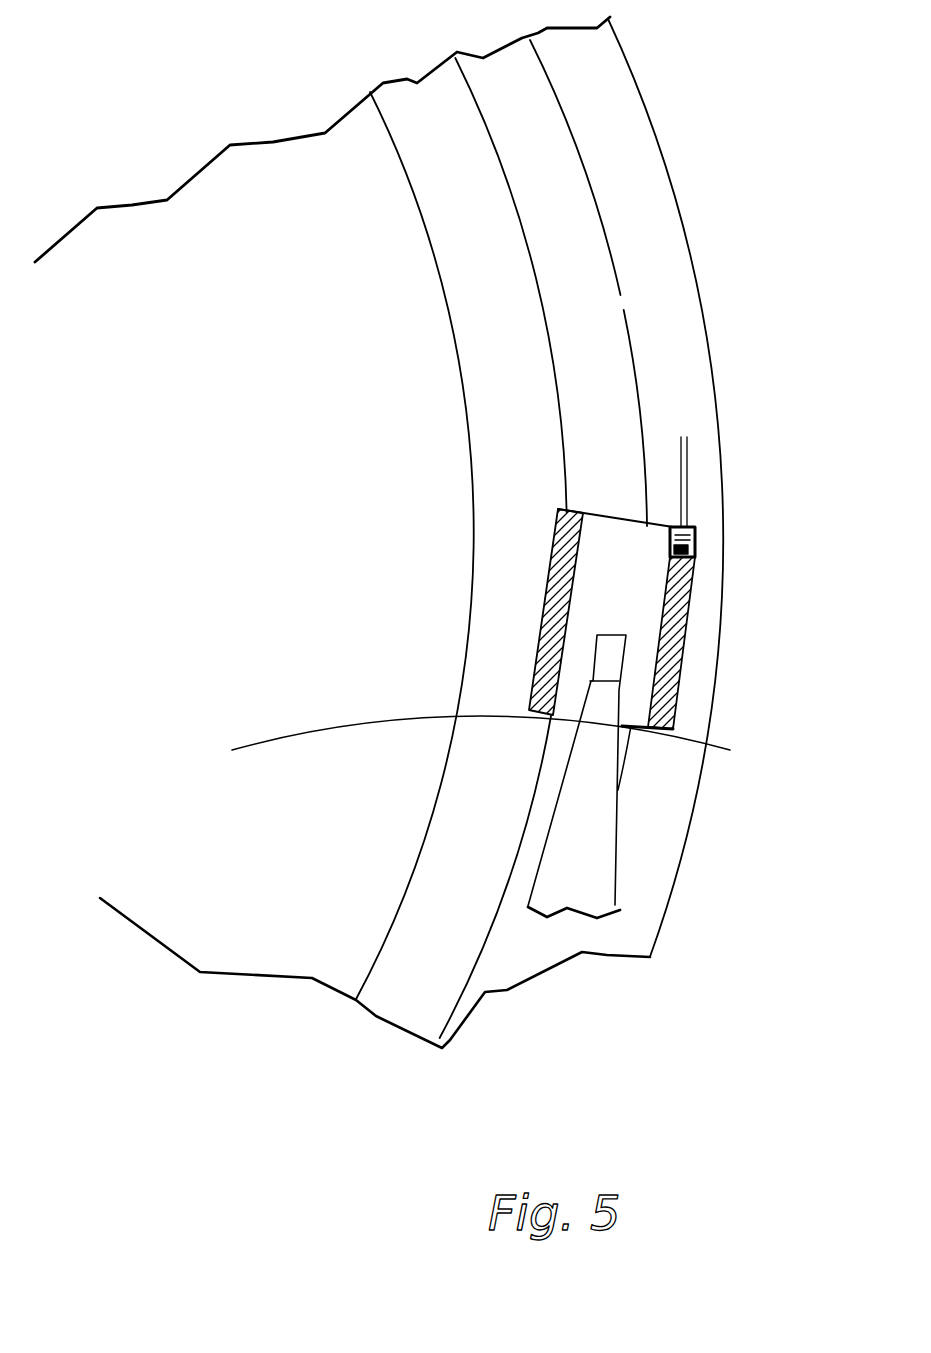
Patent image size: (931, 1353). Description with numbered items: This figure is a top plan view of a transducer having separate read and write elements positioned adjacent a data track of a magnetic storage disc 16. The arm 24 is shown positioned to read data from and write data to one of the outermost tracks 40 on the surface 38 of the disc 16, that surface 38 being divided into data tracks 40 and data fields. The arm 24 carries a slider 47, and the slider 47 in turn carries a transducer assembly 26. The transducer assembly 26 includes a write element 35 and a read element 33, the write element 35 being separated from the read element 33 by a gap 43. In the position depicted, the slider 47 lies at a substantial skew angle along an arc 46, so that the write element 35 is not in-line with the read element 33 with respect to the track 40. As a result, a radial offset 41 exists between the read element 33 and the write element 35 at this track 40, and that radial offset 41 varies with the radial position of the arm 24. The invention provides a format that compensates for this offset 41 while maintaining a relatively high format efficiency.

The magnetic storage disc 16 is at (676, 191).
The arm 24 is at (641, 776).
The transducer assembly 26 is at (646, 569).
The read element 33 is at (732, 547).
The write element 35 is at (615, 535).
The surface 38 is at (518, 372).
The data tracks 40 is at (649, 415).
The radial offset 41 is at (623, 443).
The gap 43 is at (730, 518).
The arc 46 is at (409, 718).
The slider 47 is at (667, 619).